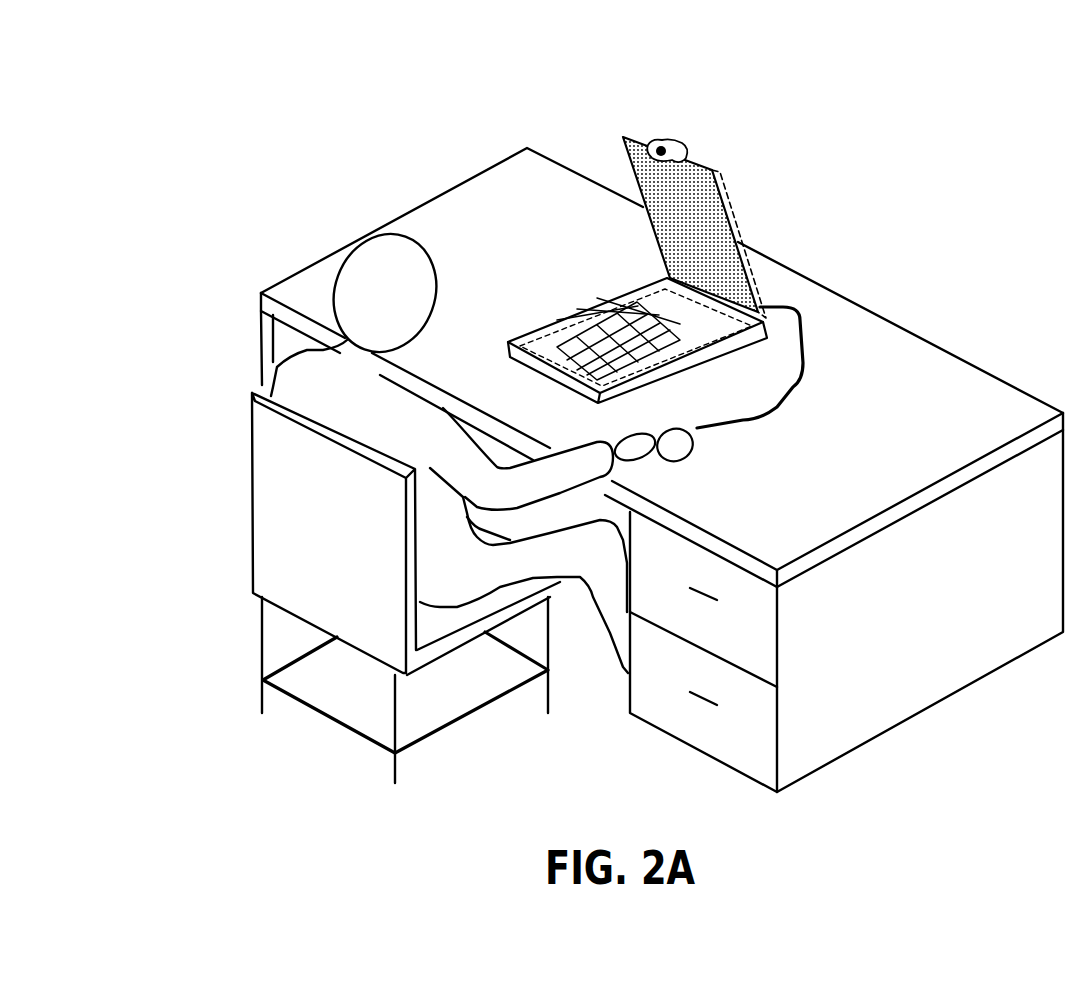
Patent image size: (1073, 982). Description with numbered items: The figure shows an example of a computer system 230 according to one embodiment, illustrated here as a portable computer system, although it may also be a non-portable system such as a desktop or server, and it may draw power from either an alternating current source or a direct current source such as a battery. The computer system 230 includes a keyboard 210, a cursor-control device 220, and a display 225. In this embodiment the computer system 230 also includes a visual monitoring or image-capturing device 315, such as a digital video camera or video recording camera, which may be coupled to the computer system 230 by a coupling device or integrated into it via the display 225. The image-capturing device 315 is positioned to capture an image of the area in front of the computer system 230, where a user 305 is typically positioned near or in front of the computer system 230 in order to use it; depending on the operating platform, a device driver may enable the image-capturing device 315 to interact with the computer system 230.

The keyboard 210 is at (570, 340).
The cursor-control device 220 is at (687, 453).
The display 225 is at (736, 180).
The computer system 230 is at (668, 222).
The user 305 is at (470, 446).
The image-capturing device 315 is at (643, 140).